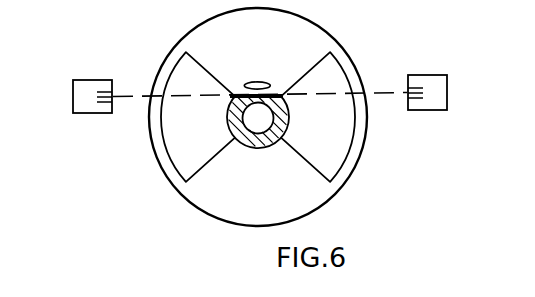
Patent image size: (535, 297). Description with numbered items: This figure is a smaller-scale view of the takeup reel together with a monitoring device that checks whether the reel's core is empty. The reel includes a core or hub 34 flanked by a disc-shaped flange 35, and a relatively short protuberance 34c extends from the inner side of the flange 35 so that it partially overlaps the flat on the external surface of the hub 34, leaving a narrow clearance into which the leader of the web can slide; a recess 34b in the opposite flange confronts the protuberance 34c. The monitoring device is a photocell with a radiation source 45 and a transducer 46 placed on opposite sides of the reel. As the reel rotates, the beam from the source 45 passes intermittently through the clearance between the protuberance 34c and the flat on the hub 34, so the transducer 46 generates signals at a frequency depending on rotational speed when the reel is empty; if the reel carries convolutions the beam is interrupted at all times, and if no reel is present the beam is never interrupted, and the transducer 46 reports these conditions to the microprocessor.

The core or hub 34 is at (288, 125).
The recess 34b is at (240, 92).
The protuberance 34c is at (256, 83).
The disc-shaped flange 35 is at (208, 198).
The radiation source 45 is at (89, 82).
The transducer 46 is at (427, 78).